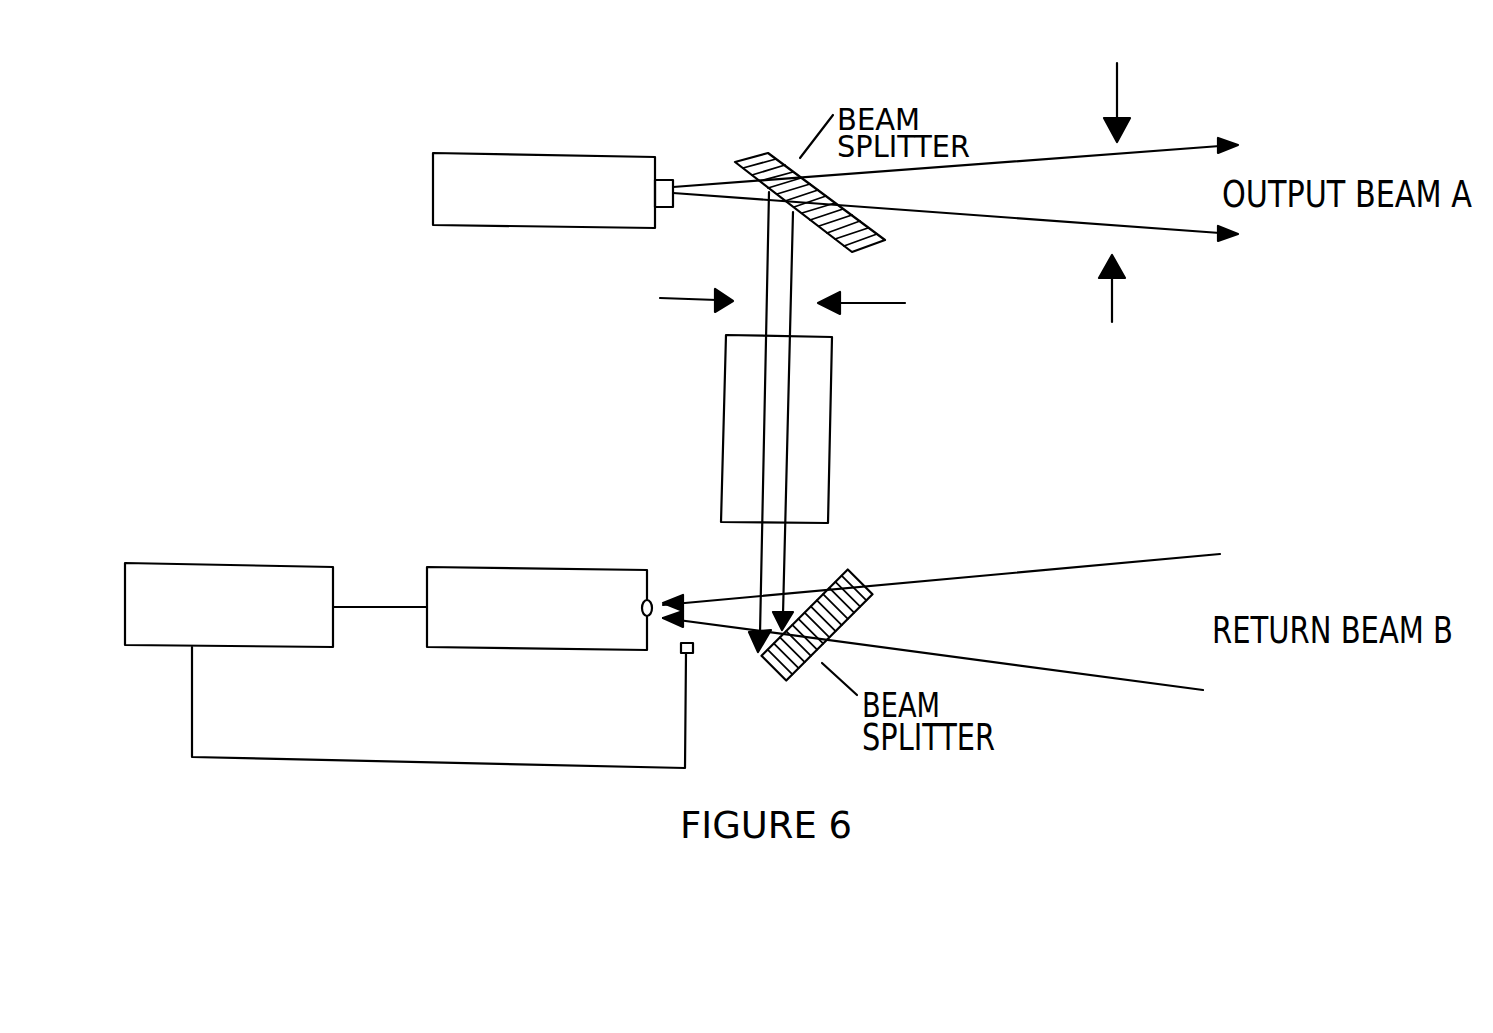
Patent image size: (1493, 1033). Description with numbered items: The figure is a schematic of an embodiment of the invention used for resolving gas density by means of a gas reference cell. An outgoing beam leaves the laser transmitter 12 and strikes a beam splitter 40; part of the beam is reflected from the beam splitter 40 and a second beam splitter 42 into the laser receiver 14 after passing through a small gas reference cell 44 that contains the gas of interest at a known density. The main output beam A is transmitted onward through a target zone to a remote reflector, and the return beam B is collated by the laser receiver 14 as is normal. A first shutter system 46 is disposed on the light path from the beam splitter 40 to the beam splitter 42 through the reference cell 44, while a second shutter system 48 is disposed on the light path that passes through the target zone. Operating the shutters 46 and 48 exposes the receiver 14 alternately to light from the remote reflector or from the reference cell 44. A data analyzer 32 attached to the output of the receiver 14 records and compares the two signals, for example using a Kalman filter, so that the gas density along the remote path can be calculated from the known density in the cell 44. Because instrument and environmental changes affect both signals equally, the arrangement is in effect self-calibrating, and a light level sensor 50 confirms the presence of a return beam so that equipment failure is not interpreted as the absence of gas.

The laser transmitter 12 is at (570, 153).
The laser receiver 14 is at (477, 648).
The data analyzer 32 is at (280, 647).
The beam splitter 40 is at (757, 158).
The beam splitter 42 is at (765, 673).
The gas reference cell 44 is at (832, 458).
The first shutter system 46 is at (680, 298).
The second shutter system 48 is at (1117, 80).
The light level sensor 50 is at (681, 652).